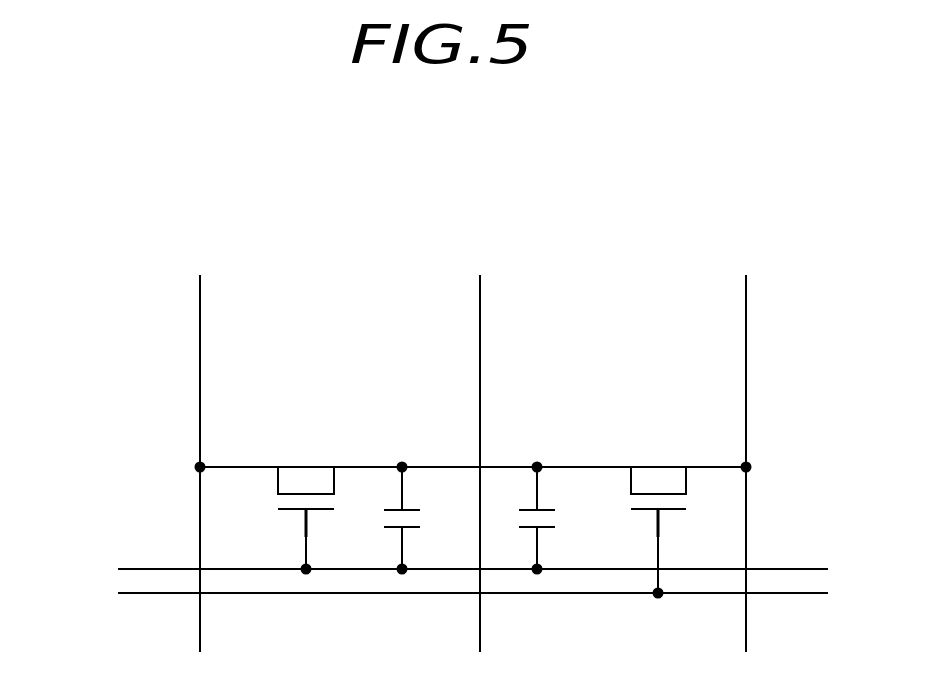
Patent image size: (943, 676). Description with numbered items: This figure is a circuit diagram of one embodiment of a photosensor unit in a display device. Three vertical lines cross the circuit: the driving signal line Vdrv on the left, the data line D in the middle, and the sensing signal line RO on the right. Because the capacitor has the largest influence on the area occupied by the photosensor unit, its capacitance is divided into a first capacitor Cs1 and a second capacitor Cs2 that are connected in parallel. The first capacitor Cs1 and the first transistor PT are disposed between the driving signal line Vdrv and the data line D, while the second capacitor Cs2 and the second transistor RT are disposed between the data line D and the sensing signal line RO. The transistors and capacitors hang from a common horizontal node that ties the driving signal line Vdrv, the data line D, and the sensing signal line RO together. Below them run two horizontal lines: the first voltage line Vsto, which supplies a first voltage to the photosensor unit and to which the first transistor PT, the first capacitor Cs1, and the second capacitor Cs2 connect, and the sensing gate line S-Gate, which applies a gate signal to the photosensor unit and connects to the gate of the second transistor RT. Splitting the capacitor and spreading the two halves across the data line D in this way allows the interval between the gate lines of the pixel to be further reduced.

The driving signal line Vdrv is at (200, 303).
The data line D is at (480, 303).
The sensing signal line RO is at (746, 303).
The first transistor PT is at (306, 508).
The second transistor RT is at (658, 520).
The first capacitor Cs1 is at (427, 518).
The second capacitor Cs2 is at (560, 518).
The first voltage line Vsto is at (449, 568).
The sensing gate line S-Gate is at (431, 592).